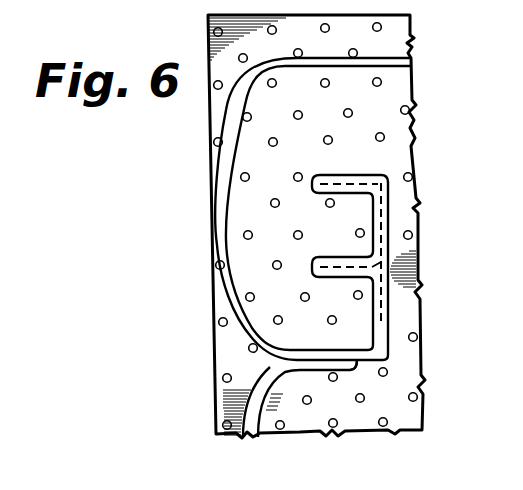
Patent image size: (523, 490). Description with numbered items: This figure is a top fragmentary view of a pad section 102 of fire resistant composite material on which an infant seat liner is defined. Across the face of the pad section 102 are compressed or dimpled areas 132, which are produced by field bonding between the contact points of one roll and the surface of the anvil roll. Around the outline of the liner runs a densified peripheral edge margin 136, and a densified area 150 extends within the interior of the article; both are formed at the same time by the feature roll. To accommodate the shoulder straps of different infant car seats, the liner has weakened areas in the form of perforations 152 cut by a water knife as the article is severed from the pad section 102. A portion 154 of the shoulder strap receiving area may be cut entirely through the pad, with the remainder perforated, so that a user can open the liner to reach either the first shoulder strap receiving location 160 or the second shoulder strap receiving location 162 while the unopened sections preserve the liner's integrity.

The pad section 102 is at (412, 37).
The compressed or dimpled areas 132 is at (400, 113).
The densified peripheral edge margin 136 is at (243, 320).
The densified area 150 is at (383, 266).
The perforations 152 is at (382, 331).
The cut-through portion 154 is at (353, 363).
The first shoulder strap receiving location 160 is at (330, 274).
The second shoulder strap receiving location 162 is at (340, 183).